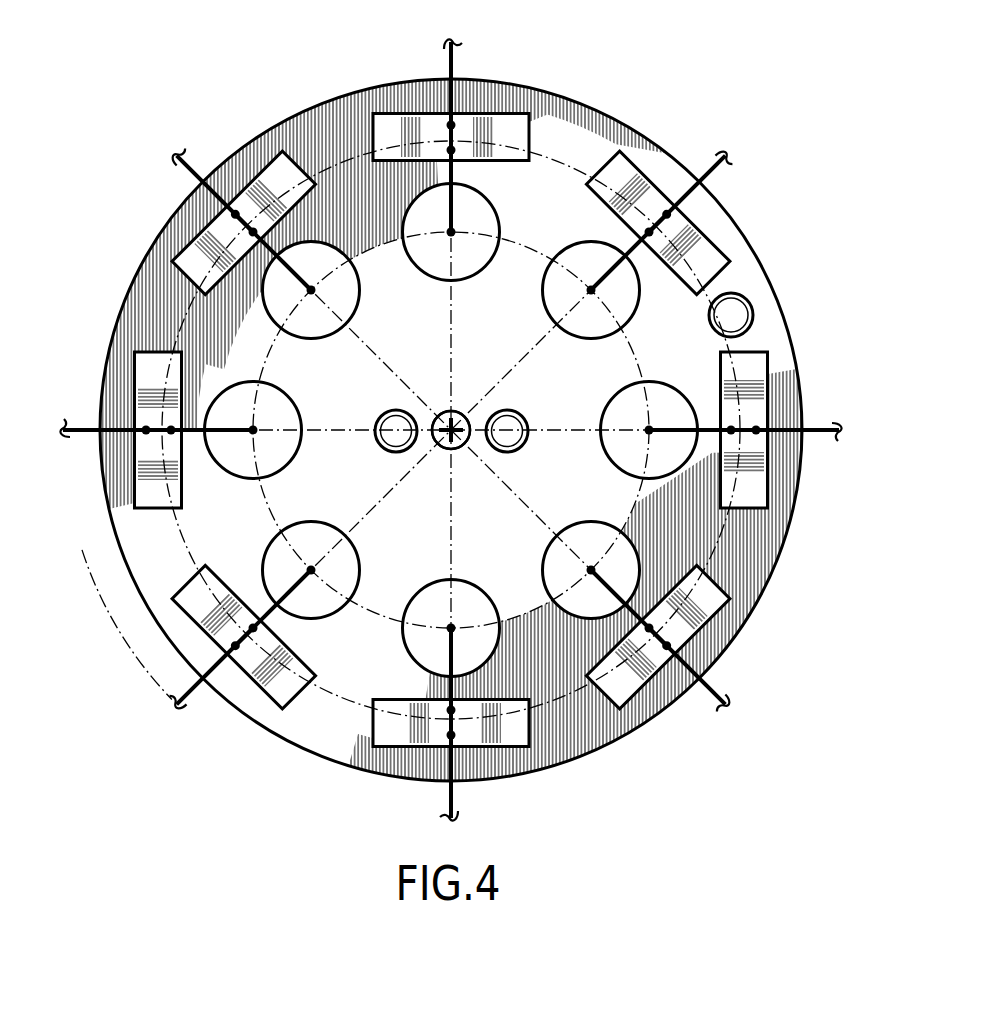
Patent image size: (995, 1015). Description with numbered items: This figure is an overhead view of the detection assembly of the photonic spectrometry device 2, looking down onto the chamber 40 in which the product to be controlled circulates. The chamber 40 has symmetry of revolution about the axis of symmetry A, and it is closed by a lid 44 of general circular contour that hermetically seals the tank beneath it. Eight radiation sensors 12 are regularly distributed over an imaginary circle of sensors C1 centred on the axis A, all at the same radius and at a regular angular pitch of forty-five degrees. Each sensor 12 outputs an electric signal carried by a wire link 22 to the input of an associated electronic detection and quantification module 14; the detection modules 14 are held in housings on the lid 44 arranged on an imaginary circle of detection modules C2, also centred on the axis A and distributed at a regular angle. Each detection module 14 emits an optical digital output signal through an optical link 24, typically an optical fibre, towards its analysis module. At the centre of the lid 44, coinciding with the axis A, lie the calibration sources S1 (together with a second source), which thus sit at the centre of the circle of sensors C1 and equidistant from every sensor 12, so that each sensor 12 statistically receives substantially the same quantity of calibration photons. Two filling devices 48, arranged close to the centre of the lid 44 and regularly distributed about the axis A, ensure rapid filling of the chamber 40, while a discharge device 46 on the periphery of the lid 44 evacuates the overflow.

The photonic spectrometry device 2 is at (765, 94).
The chamber 40 is at (637, 120).
The radiation sensor 12 is at (578, 322).
The electronic detection and quantification module 14 is at (513, 125).
The wire link 22 is at (447, 204).
The optical link 24 is at (447, 60).
The lid 44 is at (711, 212).
The discharge device 46 is at (733, 314).
The filling device 48 is at (395, 450).
The axis of symmetry A is at (461, 414).
The calibration source S1 is at (440, 414).
The circle of sensors C1 is at (532, 253).
The circle of detection modules C2 is at (148, 577).